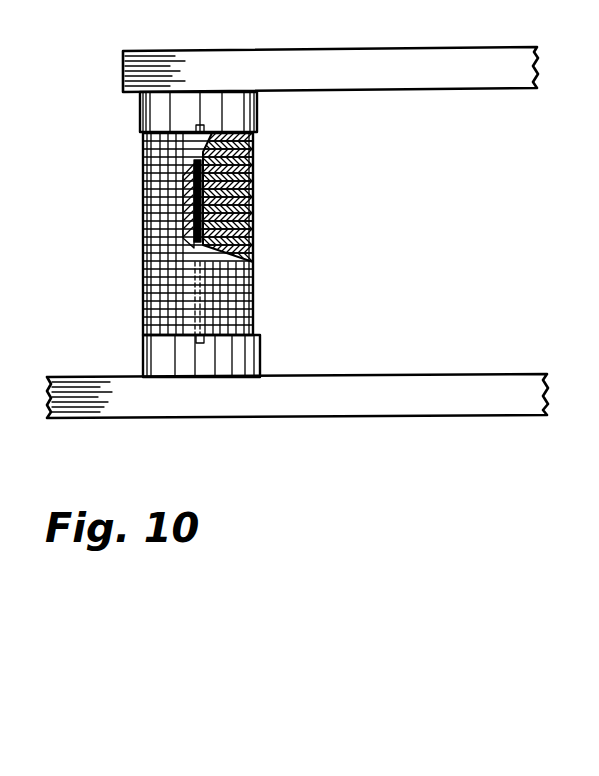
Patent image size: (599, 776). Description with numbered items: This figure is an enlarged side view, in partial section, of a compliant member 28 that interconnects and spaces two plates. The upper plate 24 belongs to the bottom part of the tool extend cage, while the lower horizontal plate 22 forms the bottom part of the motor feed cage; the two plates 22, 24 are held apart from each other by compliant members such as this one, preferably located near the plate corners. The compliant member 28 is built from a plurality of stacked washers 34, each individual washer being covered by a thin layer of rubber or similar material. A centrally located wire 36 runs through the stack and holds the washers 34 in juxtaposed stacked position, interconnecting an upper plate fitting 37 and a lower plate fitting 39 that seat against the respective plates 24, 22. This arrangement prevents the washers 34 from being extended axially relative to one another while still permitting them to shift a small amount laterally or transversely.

The horizontal plate 22 is at (313, 405).
The plate 24 is at (346, 64).
The compliant member 28 is at (258, 292).
The stacked washers 34 is at (140, 137).
The centrally located wire 36 is at (257, 197).
The upper plate fitting 37 is at (257, 110).
The lower plate fitting 39 is at (258, 348).